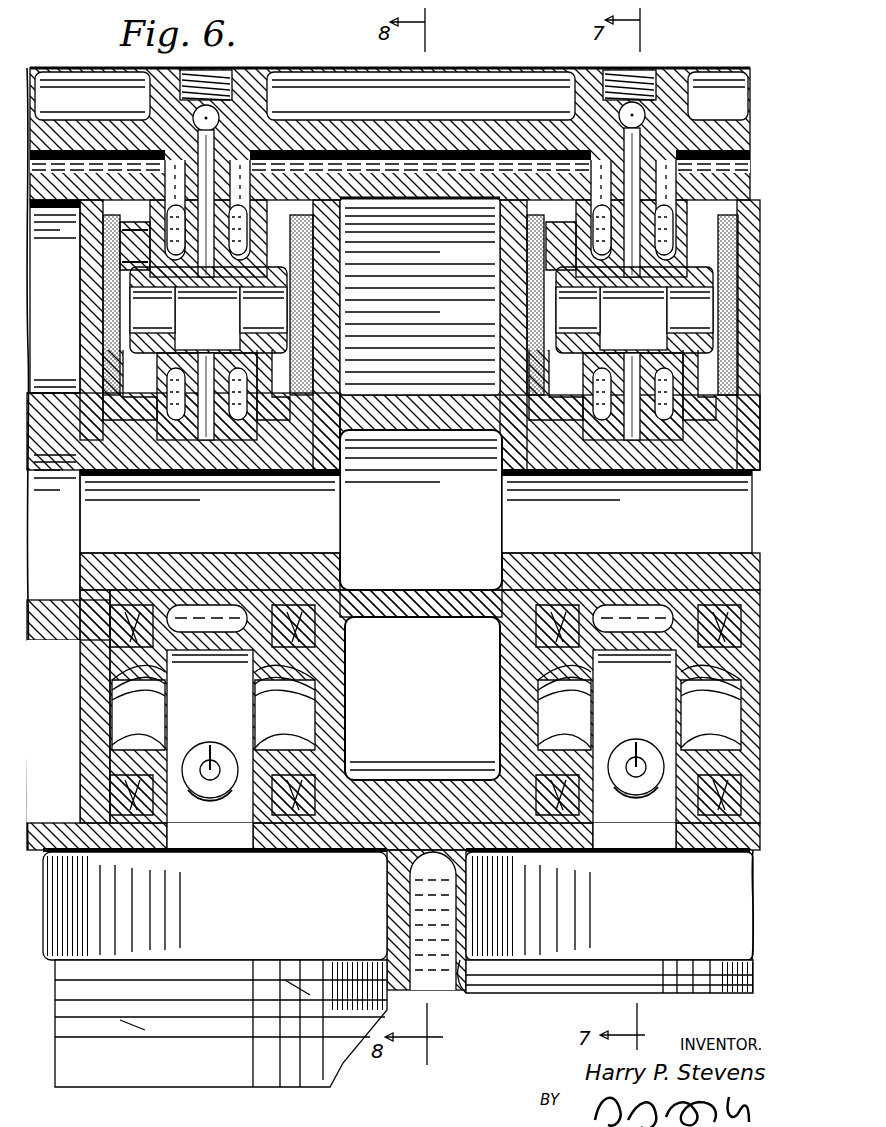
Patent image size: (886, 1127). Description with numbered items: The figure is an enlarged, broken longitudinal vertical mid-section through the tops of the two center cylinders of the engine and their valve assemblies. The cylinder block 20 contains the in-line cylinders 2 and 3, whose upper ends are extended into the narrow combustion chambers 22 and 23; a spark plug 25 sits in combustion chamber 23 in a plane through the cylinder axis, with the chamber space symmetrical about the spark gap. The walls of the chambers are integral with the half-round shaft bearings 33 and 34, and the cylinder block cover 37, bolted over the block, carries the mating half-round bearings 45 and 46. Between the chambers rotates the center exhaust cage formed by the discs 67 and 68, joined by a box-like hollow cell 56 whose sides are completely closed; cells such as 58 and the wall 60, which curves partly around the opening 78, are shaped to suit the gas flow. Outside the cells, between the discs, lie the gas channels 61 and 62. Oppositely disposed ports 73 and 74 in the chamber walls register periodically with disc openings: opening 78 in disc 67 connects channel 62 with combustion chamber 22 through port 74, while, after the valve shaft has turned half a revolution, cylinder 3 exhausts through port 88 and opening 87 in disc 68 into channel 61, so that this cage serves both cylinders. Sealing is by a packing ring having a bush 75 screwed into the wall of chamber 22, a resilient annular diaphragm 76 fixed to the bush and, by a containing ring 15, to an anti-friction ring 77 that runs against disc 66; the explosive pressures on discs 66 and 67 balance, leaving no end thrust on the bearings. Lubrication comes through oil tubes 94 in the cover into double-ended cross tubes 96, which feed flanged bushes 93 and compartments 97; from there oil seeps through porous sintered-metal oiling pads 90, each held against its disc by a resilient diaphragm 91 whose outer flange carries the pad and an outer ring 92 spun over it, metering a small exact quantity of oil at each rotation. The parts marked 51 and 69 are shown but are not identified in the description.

The cylinder 2 is at (58, 960).
The cylinder 3 is at (748, 893).
The containing ring 15 is at (100, 592).
The cylinder block 20 is at (745, 840).
The combustion chamber 22 is at (235, 840).
The combustion chamber 23 is at (632, 840).
The spark plug 25 is at (657, 840).
The shaft bearing 33 is at (180, 577).
The shaft bearing 34 is at (610, 590).
The cylinder block cover 37 is at (490, 85).
The bearing 45 is at (182, 428).
The bearing 46 is at (607, 425).
The housing flange 51 is at (272, 460).
The hollow cell 56 is at (380, 450).
The cell 58 is at (470, 440).
The cell wall 60 is at (410, 590).
The gas channel 61 is at (342, 227).
The gas channel 62 is at (375, 832).
The disc 66 is at (180, 316).
The disc 67 is at (330, 318).
The disc 68 is at (525, 308).
The housing wall 69 is at (748, 727).
The port 73 is at (152, 710).
The port 74 is at (262, 720).
The bush 75 is at (150, 682).
The resilient annular diaphragm 76 is at (135, 655).
The anti-friction ring 77 is at (110, 783).
The opening 78 is at (330, 697).
The opening 87 is at (515, 365).
The port 88 is at (578, 712).
The oiling pad 90 is at (112, 237).
The resilient diaphragm 91 is at (125, 256).
The outer ring 92 is at (100, 210).
The flanged bush 93 is at (735, 268).
The oil tube 94 is at (208, 148).
The cross tube 96 is at (110, 322).
The compartment 97 is at (712, 368).